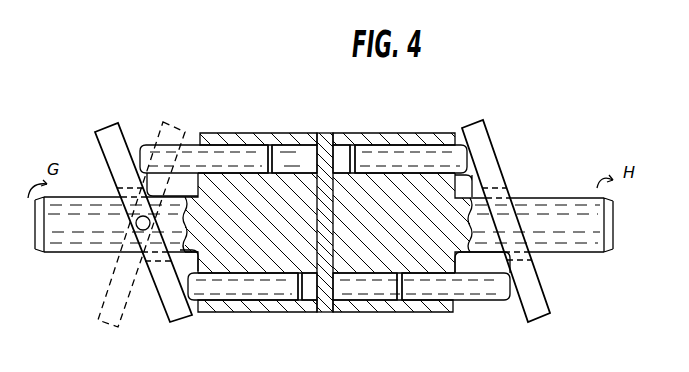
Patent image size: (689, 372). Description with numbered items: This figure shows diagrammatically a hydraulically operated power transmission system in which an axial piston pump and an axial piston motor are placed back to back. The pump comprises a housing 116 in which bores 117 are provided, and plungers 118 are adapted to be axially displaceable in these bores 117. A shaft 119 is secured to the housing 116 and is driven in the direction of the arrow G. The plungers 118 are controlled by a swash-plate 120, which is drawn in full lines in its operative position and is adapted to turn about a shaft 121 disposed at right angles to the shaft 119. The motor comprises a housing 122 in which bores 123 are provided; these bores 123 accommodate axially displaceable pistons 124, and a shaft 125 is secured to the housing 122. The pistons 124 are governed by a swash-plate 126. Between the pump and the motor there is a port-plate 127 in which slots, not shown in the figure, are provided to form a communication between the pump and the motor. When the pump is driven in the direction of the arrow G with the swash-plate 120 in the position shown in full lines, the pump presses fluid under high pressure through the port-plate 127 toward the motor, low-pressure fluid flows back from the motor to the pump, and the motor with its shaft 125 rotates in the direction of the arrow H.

The housing 116 is at (248, 142).
The bores 117 is at (305, 153).
The plungers 118 is at (190, 152).
The shaft 119 is at (60, 237).
The swash-plate 120 is at (173, 315).
The shaft 121 is at (136, 225).
The housing 122 is at (398, 147).
The bores 123 is at (343, 153).
The pistons 124 is at (440, 153).
The shaft 125 is at (597, 233).
The swash-plate 126 is at (547, 310).
The port-plate 127 is at (323, 312).